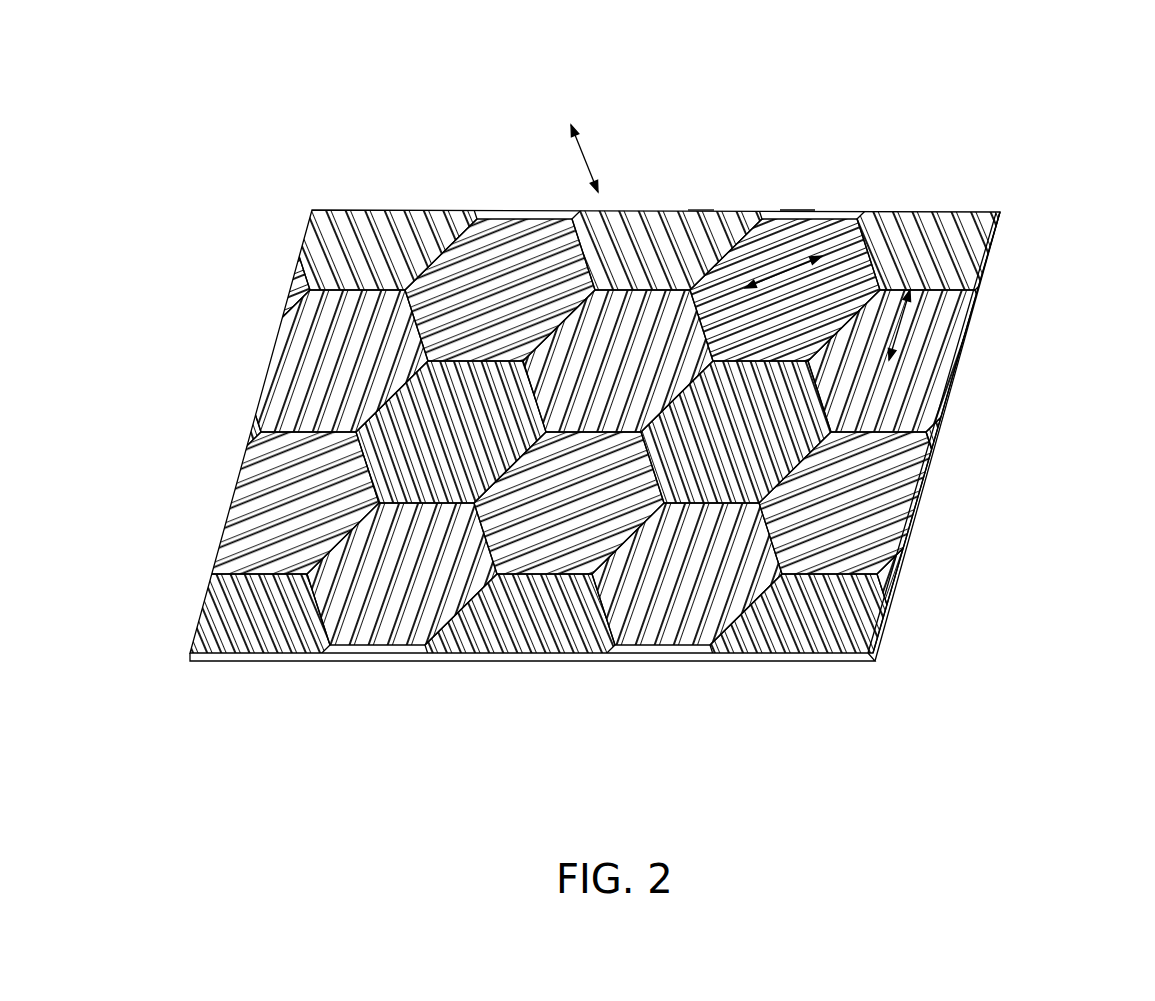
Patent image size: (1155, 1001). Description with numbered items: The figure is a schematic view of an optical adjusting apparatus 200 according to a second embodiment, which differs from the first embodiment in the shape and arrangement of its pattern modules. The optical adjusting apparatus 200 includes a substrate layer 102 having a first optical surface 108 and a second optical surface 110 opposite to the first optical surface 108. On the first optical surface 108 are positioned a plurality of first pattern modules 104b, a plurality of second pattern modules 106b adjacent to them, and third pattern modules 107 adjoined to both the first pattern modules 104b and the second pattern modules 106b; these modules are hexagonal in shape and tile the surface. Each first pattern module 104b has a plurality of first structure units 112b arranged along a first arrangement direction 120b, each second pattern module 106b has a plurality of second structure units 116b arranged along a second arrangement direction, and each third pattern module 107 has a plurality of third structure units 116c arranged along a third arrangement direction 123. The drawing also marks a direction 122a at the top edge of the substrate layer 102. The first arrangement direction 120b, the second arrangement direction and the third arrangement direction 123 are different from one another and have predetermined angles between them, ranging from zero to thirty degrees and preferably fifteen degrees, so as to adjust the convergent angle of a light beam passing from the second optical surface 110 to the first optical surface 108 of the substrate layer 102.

The optical adjusting apparatus 200 is at (1150, 77).
The substrate layer 102 is at (1000, 240).
The first pattern module 104b is at (797, 212).
The second pattern module 106b is at (629, 210).
The third pattern module 107 is at (970, 336).
The first optical surface 108 is at (980, 287).
The second optical surface 110 is at (937, 468).
The first structure unit 112b is at (830, 228).
The second structure unit 116b is at (701, 210).
The third structure unit 116c is at (937, 388).
The first arrangement direction 120b is at (783, 272).
The groove direction 122a is at (590, 158).
The third arrangement direction 123 is at (903, 338).